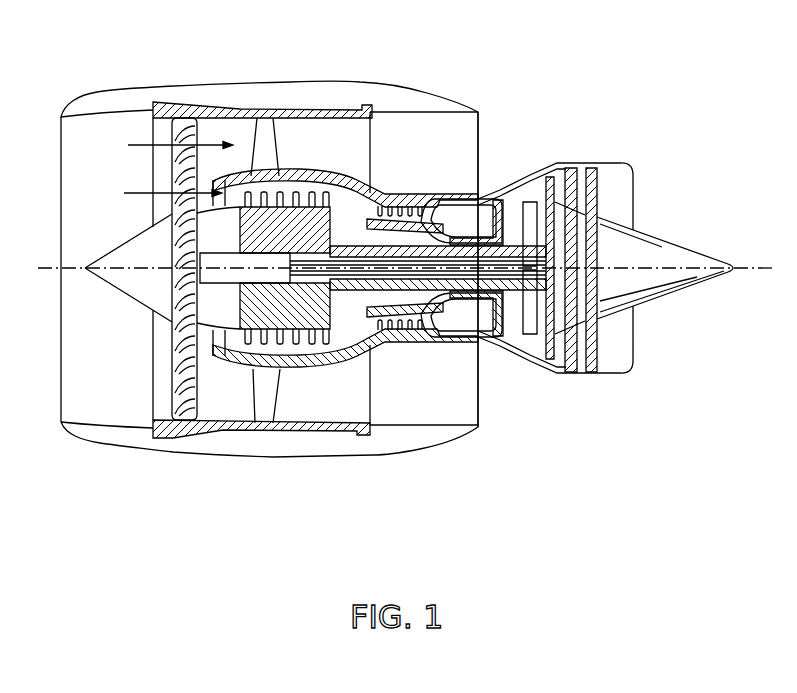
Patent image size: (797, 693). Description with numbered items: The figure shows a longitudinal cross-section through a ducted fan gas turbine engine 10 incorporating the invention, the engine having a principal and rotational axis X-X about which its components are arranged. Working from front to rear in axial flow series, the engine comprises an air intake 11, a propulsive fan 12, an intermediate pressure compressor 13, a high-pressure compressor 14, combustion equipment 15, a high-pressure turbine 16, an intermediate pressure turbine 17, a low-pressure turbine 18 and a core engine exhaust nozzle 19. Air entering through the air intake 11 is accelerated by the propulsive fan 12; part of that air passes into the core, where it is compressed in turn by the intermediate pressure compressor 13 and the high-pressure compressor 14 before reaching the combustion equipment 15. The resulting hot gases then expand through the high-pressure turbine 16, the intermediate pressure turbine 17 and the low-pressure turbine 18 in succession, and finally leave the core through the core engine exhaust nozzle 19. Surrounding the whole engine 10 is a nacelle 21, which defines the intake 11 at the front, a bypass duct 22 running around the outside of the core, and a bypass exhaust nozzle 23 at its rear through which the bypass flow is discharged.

The ducted fan gas turbine engine 10 is at (127, 65).
The air intake 11 is at (107, 117).
The propulsive fan 12 is at (172, 379).
The intermediate pressure compressor 13 is at (297, 346).
The high-pressure compressor 14 is at (398, 210).
The combustion equipment 15 is at (450, 327).
The high-pressure turbine 16 is at (497, 345).
The intermediate pressure turbine 17 is at (530, 186).
The low-pressure turbine 18 is at (543, 372).
The core engine exhaust nozzle 19 is at (627, 164).
The nacelle 21 is at (275, 82).
The bypass duct 22 is at (452, 150).
The bypass exhaust nozzle 23 is at (480, 110).